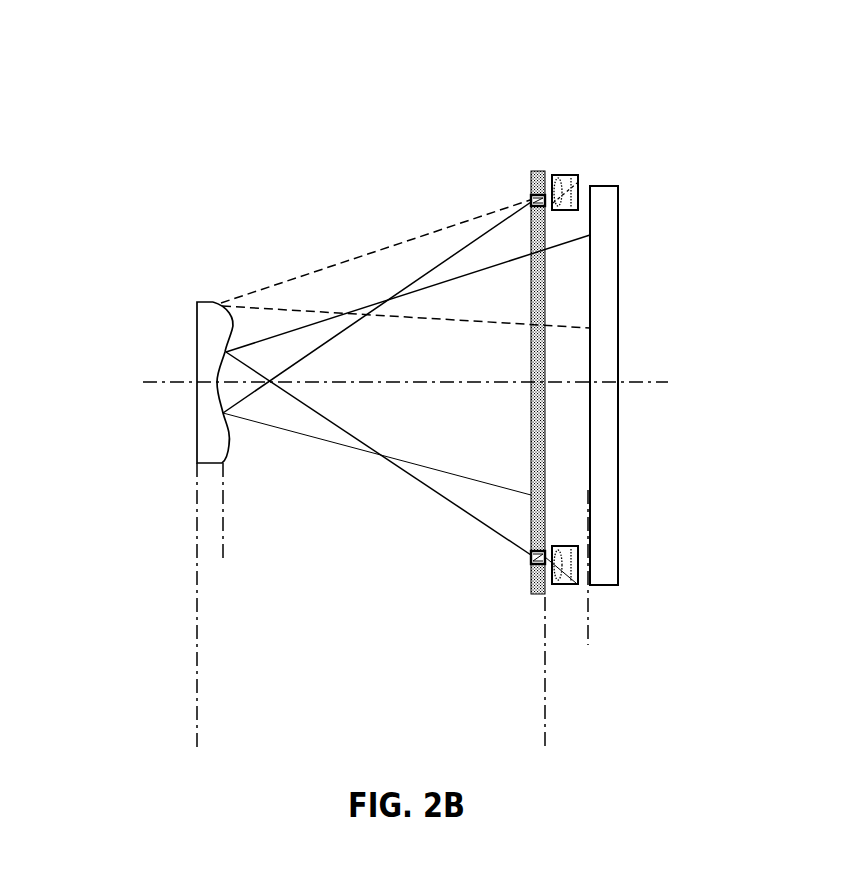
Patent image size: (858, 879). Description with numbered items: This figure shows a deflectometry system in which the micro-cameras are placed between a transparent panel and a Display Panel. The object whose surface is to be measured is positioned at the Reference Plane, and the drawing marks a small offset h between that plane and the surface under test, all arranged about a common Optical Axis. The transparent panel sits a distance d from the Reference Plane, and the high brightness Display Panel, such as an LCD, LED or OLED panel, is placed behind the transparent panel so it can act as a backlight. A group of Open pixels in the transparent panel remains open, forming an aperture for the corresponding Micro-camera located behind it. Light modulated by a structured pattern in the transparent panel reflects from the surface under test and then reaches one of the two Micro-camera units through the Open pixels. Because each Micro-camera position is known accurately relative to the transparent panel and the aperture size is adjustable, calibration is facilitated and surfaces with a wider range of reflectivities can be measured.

The optical axis Optical Axis is at (163, 382).
The reference plane Reference Plane is at (197, 560).
The height h is at (245, 503).
The distance d is at (545, 733).
The open pixels Open pixels is at (531, 195).
The micro-camera Micro-camera is at (568, 206).
The display panel Display Panel is at (607, 192).